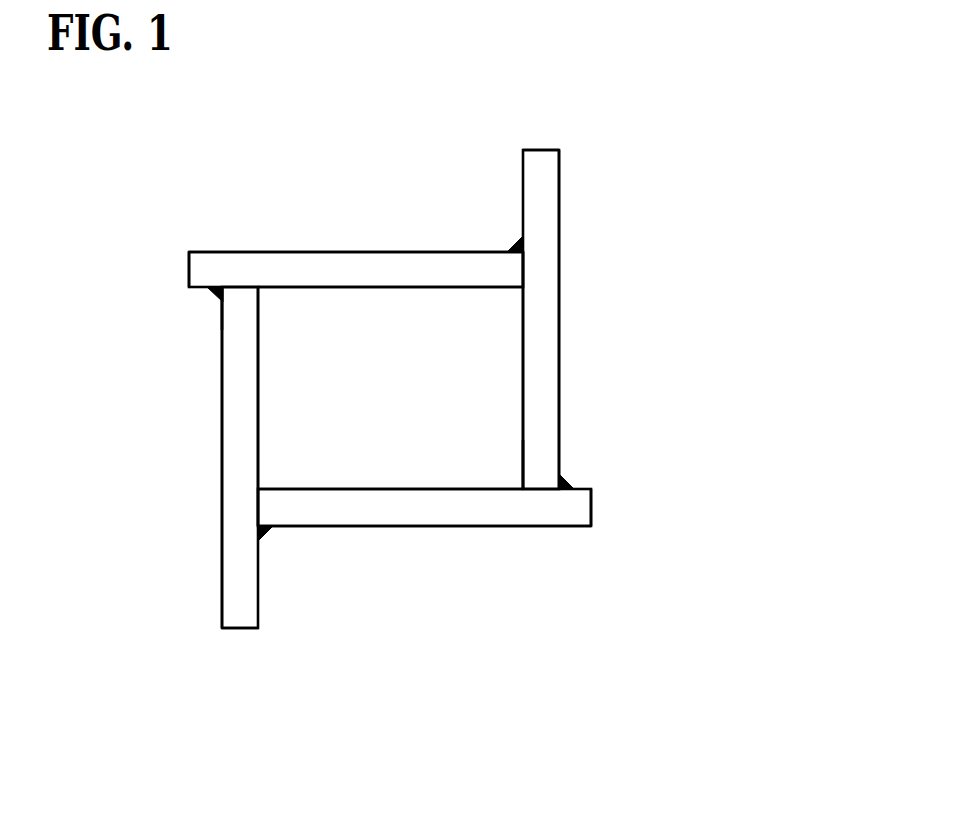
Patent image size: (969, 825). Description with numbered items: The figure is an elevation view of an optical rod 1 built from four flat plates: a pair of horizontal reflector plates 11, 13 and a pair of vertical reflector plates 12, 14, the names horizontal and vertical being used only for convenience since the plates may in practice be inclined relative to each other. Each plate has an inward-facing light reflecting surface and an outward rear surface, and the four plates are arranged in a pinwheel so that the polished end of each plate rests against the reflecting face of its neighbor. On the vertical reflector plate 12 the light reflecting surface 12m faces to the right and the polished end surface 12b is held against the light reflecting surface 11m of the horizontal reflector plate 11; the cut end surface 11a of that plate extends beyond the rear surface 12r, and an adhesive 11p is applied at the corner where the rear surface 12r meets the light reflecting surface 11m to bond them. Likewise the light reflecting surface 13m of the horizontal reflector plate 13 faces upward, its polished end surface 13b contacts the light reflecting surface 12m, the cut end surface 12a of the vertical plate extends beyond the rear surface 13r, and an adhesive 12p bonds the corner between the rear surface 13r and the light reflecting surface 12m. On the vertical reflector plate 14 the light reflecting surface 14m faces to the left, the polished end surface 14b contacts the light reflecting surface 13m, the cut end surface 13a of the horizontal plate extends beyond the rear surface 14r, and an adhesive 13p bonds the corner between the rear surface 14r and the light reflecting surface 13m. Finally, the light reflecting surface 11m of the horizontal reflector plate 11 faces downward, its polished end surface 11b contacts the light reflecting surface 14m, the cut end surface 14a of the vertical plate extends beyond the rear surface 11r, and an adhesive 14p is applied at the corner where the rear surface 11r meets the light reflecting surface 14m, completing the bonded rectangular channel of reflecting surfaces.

The optical rod 1 is at (743, 161).
The horizontal reflector plate 11 is at (349, 268).
The rear surface 11r is at (291, 251).
The light reflecting surface 11m is at (366, 289).
The cut end surface 11a is at (188, 271).
The polished end surface 11b is at (522, 272).
The adhesive 11p is at (214, 291).
The vertical reflector plate 12 is at (234, 394).
The rear surface 12r is at (222, 439).
The light reflecting surface 12m is at (258, 421).
The cut end surface 12a is at (235, 632).
The polished end surface 12b is at (222, 308).
The adhesive 12p is at (263, 530).
The horizontal reflector plate 13 is at (483, 512).
The rear surface 13r is at (413, 529).
The light reflecting surface 13m is at (315, 488).
The cut end surface 13a is at (591, 512).
The polished end surface 13b is at (262, 506).
The adhesive 13p is at (573, 490).
The vertical reflector plate 14 is at (545, 403).
The rear surface 14r is at (560, 323).
The light reflecting surface 14m is at (523, 342).
The cut end surface 14a is at (542, 150).
The polished end surface 14b is at (540, 489).
The adhesive 14p is at (518, 246).